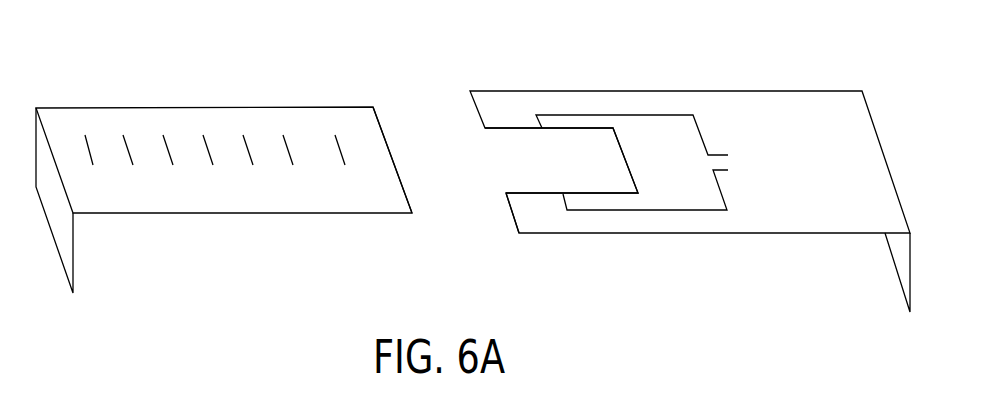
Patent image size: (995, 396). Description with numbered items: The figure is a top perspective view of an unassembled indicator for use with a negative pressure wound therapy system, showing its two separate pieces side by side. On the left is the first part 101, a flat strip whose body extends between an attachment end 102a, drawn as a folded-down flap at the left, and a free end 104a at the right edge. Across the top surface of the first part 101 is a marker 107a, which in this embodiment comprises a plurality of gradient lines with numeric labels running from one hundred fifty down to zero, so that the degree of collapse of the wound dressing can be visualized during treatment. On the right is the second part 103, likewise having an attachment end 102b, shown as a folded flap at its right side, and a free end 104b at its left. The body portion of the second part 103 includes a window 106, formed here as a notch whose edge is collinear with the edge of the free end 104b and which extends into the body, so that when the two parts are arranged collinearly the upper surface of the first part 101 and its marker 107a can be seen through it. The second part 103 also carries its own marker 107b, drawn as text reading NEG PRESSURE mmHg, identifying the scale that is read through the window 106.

The first part 101 is at (58, 105).
The attachment end 102a is at (68, 245).
The attachment end 102b is at (896, 260).
The second part 103 is at (673, 233).
The free end 104a is at (408, 197).
The free end 104b is at (515, 218).
The window 106 is at (507, 132).
The marker 107a is at (80, 116).
The marker 107b is at (658, 116).